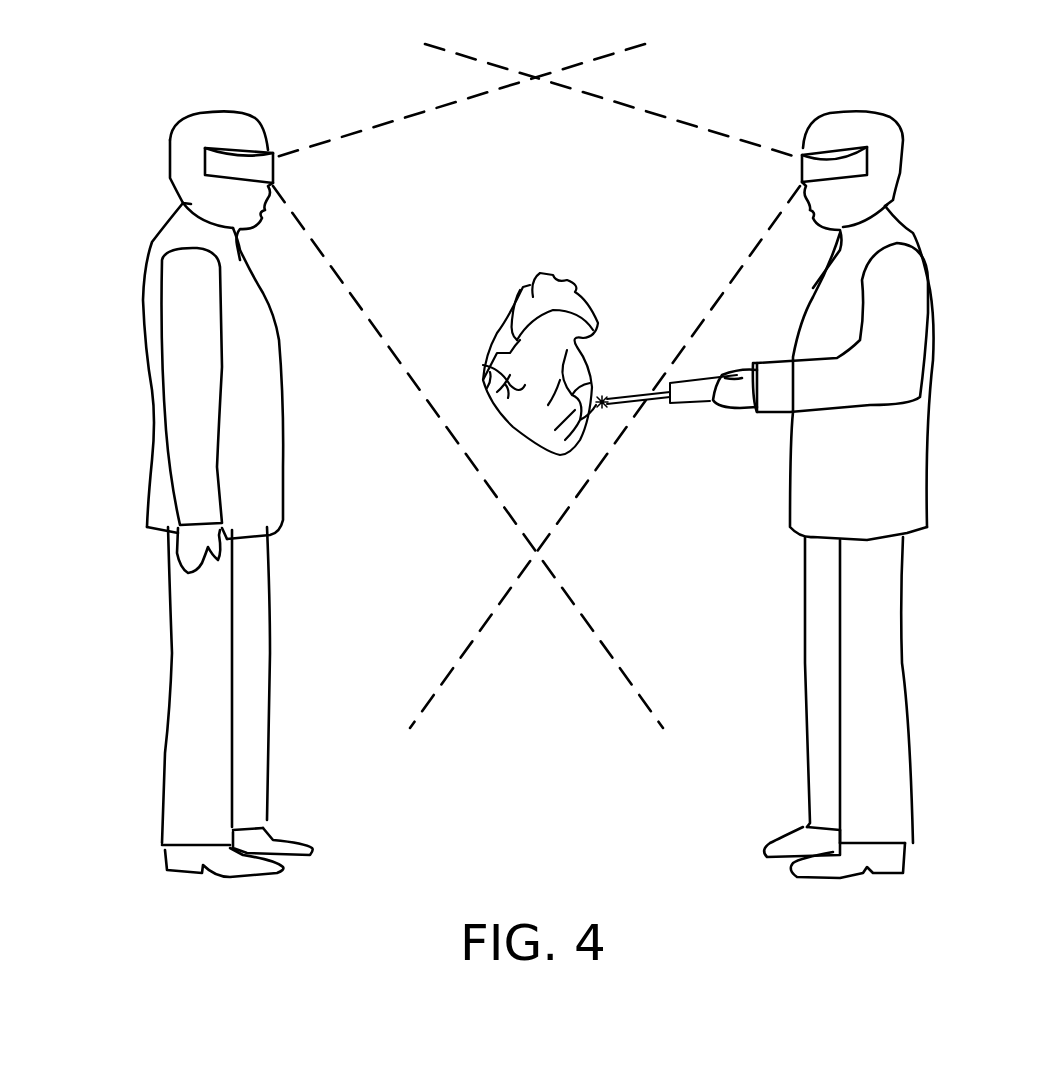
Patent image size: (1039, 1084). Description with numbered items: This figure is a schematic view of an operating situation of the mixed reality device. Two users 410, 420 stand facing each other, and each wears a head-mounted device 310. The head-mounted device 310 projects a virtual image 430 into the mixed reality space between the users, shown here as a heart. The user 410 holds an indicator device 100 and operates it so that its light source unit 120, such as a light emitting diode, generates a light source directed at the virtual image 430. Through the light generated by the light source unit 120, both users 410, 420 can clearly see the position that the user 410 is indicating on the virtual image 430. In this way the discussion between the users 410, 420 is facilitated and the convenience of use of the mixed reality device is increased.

The indicator device 100 is at (690, 400).
The light source unit 120 is at (606, 406).
The head-mounted device 310 is at (243, 160).
The user 410 is at (893, 100).
The user 420 is at (183, 100).
The virtual image 430 is at (526, 275).